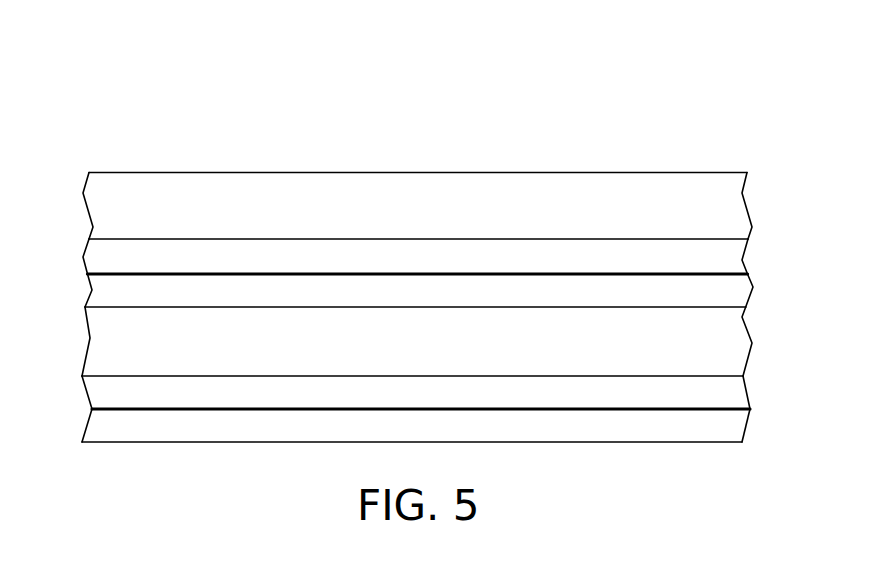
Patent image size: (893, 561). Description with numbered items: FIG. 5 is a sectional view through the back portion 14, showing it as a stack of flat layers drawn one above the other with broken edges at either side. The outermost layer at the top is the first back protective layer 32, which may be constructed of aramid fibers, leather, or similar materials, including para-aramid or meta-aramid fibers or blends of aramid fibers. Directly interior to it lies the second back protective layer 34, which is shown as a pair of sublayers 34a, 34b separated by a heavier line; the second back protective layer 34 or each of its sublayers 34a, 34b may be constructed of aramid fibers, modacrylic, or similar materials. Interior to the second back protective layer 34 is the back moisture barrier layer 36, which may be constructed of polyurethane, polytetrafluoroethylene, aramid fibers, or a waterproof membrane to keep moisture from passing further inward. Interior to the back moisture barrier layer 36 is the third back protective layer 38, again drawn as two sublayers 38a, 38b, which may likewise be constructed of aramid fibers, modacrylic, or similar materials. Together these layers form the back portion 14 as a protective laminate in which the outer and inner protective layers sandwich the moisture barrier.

The back portion 14 is at (413, 245).
The first back protective layer 32 is at (103, 193).
The second back protective layer 34 is at (82, 240).
The sublayer 34a is at (732, 262).
The sublayer 34b is at (737, 288).
The back moisture barrier layer 36 is at (97, 334).
The third back protective layer 38 is at (80, 377).
The sublayer 38a is at (733, 395).
The sublayer 38b is at (733, 425).